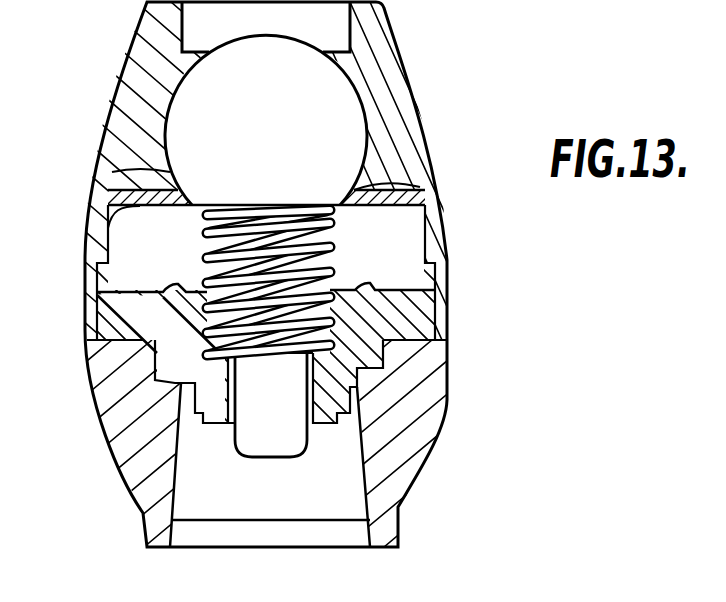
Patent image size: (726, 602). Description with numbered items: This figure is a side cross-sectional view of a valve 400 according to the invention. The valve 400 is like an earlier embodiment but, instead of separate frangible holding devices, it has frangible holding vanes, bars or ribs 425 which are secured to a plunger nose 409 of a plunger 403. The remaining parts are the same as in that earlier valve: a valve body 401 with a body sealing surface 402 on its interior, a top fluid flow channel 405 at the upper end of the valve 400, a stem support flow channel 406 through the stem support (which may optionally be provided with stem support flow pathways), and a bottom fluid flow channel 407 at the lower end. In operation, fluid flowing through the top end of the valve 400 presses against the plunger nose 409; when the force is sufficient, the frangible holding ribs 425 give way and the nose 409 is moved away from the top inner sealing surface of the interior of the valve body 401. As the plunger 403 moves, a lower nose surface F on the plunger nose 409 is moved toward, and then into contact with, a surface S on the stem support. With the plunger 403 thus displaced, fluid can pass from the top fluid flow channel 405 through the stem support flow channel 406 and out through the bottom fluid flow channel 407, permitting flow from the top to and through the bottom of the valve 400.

The valve 400 is at (98, 121).
The valve body 401 is at (437, 247).
The body sealing surface 402 is at (165, 89).
The plunger 403 is at (112, 172).
The top fluid flow channel 405 is at (383, 128).
The stem support flow channel 406 is at (395, 369).
The bottom fluid flow channel 407 is at (347, 467).
The plunger nose 409 is at (350, 77).
The frangible holding vanes, bars or ribs 425 is at (118, 226).
The lower nose surface F is at (368, 163).
The surface on the stem support S is at (337, 304).